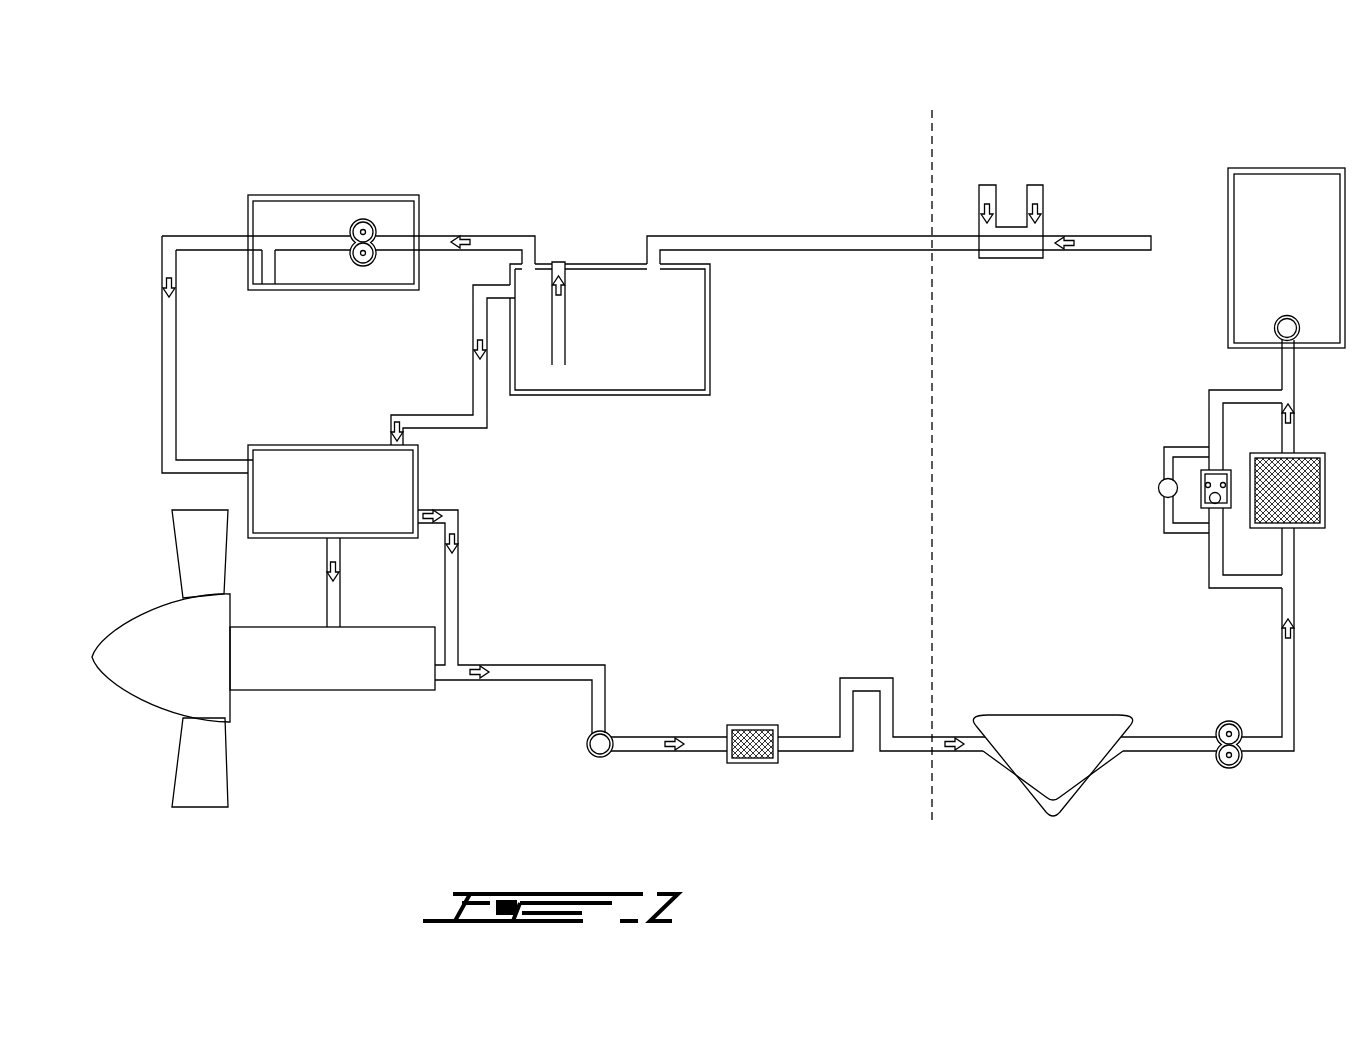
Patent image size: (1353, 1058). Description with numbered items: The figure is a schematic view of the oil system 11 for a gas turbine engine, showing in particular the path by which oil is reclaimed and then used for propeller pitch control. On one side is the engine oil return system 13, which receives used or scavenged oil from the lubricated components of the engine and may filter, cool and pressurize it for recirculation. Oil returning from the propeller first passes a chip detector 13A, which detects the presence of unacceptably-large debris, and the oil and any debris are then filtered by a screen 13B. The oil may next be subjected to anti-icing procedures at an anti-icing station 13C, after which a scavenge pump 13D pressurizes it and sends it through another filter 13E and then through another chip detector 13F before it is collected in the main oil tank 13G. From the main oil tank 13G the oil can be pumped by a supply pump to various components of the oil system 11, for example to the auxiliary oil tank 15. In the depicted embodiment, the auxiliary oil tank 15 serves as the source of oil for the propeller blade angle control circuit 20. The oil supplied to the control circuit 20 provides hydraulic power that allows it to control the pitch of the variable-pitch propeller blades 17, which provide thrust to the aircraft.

The oil system 11 is at (547, 173).
The propeller blade angle control circuit 20 is at (227, 302).
The auxiliary oil tank 15 is at (710, 342).
The propeller blades 17 is at (188, 538).
The engine oil return system 13 is at (887, 832).
The chip detector 13A is at (611, 735).
The screen 13B is at (752, 725).
The anti-icing station 13C is at (1050, 745).
The scavenge pump 13D is at (1248, 760).
The filter 13E is at (1236, 526).
The chip detector 13F is at (1260, 328).
The main oil tank 13G is at (1290, 168).